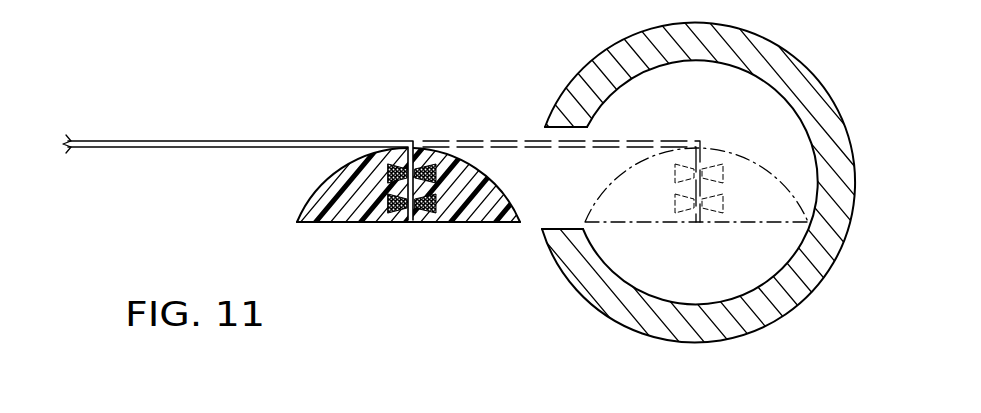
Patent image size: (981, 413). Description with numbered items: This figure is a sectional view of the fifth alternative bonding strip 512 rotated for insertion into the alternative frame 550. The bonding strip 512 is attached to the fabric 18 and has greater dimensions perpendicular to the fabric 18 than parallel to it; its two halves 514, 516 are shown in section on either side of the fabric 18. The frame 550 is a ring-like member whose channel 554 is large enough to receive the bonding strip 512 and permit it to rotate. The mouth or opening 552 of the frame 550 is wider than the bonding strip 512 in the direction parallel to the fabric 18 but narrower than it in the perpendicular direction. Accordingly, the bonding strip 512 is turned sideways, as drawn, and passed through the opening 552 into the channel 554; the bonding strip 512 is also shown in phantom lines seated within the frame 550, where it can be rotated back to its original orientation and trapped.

The fabric 18 is at (213, 141).
The bonding strip 512 is at (348, 223).
The right housing half 514 is at (467, 223).
The left housing half 516 is at (303, 210).
The frame 550 is at (738, 338).
The opening 552 is at (562, 228).
The channel 554 is at (752, 82).